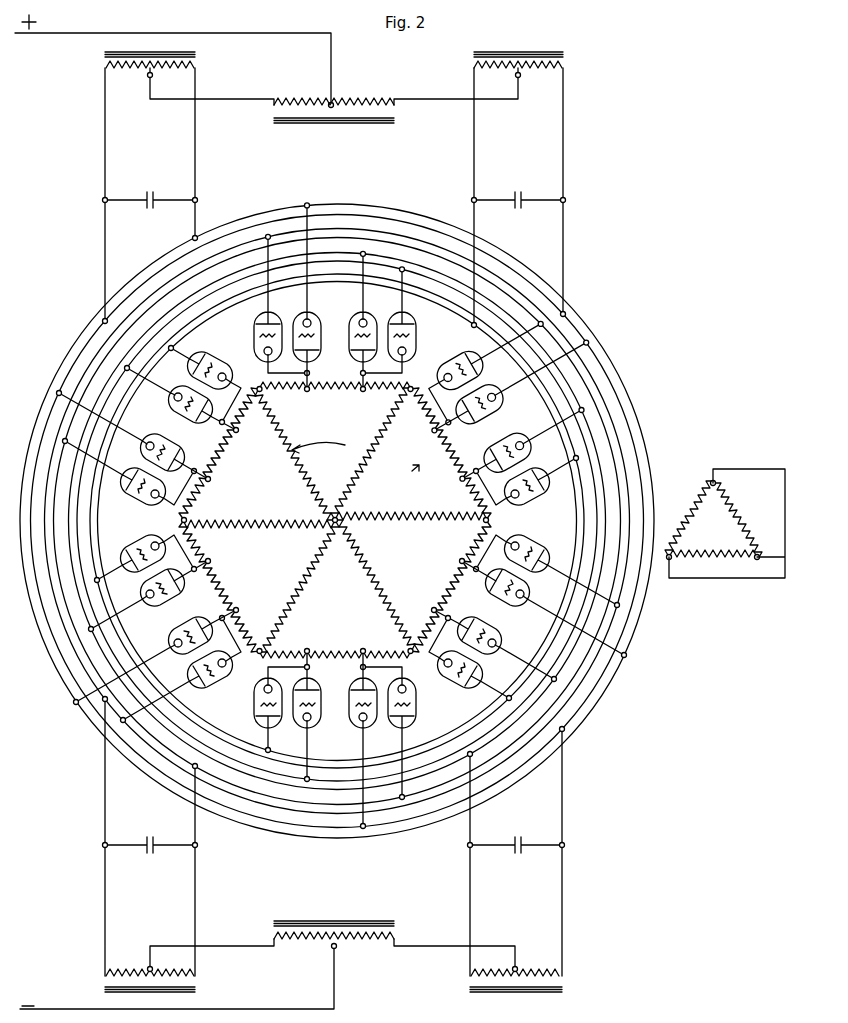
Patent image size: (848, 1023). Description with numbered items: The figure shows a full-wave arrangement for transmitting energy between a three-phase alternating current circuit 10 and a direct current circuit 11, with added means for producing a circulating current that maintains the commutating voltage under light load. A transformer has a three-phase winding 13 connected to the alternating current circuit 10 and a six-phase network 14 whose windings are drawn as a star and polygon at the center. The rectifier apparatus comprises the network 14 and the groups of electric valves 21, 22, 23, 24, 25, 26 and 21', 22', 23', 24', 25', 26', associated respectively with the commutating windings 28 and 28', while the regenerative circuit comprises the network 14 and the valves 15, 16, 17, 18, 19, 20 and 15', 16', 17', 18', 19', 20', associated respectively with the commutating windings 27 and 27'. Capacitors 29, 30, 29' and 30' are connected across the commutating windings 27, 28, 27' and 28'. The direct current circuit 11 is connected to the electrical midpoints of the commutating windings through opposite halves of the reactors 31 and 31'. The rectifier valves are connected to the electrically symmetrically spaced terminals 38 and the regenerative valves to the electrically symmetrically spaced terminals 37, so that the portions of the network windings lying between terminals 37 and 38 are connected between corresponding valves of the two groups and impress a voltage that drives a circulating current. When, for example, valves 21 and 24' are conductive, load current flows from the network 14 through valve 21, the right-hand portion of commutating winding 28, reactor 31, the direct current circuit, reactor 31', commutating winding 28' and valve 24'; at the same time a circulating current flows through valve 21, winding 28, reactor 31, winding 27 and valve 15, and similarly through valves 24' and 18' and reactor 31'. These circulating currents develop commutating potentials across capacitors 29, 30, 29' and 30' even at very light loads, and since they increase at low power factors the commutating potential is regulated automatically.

The three-phase alternating current circuit 10 is at (734, 523).
The direct current circuit 11 is at (89, 33).
The three-phase winding 13 is at (715, 541).
The six-phase network 14 is at (403, 495).
The electric valve 15 is at (317, 297).
The electric valve 15' is at (282, 304).
The electric valve 16 is at (486, 372).
The electric valve 16' is at (510, 386).
The electric valve 17 is at (543, 608).
The electric valve 17' is at (547, 567).
The electric valve 18 is at (370, 739).
The electric valve 18' is at (403, 732).
The electric valve 19 is at (156, 649).
The electric valve 19' is at (188, 669).
The electric valve 20 is at (134, 436).
The electric valve 20' is at (130, 484).
The electric valve 21 is at (401, 321).
The electric valve 21' is at (371, 321).
The electric valve 22 is at (526, 489).
The electric valve 22' is at (522, 445).
The electric valve 23 is at (470, 664).
The electric valve 23' is at (494, 645).
The electric valve 24 is at (270, 709).
The electric valve 24' is at (316, 715).
The electric valve 25 is at (146, 552).
The electric valve 25' is at (150, 595).
The electric valve 26 is at (205, 376).
The electric valve 26' is at (182, 399).
The commutating winding 27 is at (170, 188).
The commutating winding 27' is at (175, 845).
The commutating winding 28 is at (495, 190).
The commutating winding 28' is at (496, 860).
The capacitor 29 is at (150, 192).
The capacitor 29' is at (150, 861).
The capacitor 30 is at (519, 192).
The capacitor 30' is at (516, 861).
The reactor 31 is at (335, 99).
The reactor 31' is at (334, 947).
The electrically symmetrically spaced terminals 37 is at (310, 645).
The electrically symmetrically spaced terminals 38 is at (262, 600).